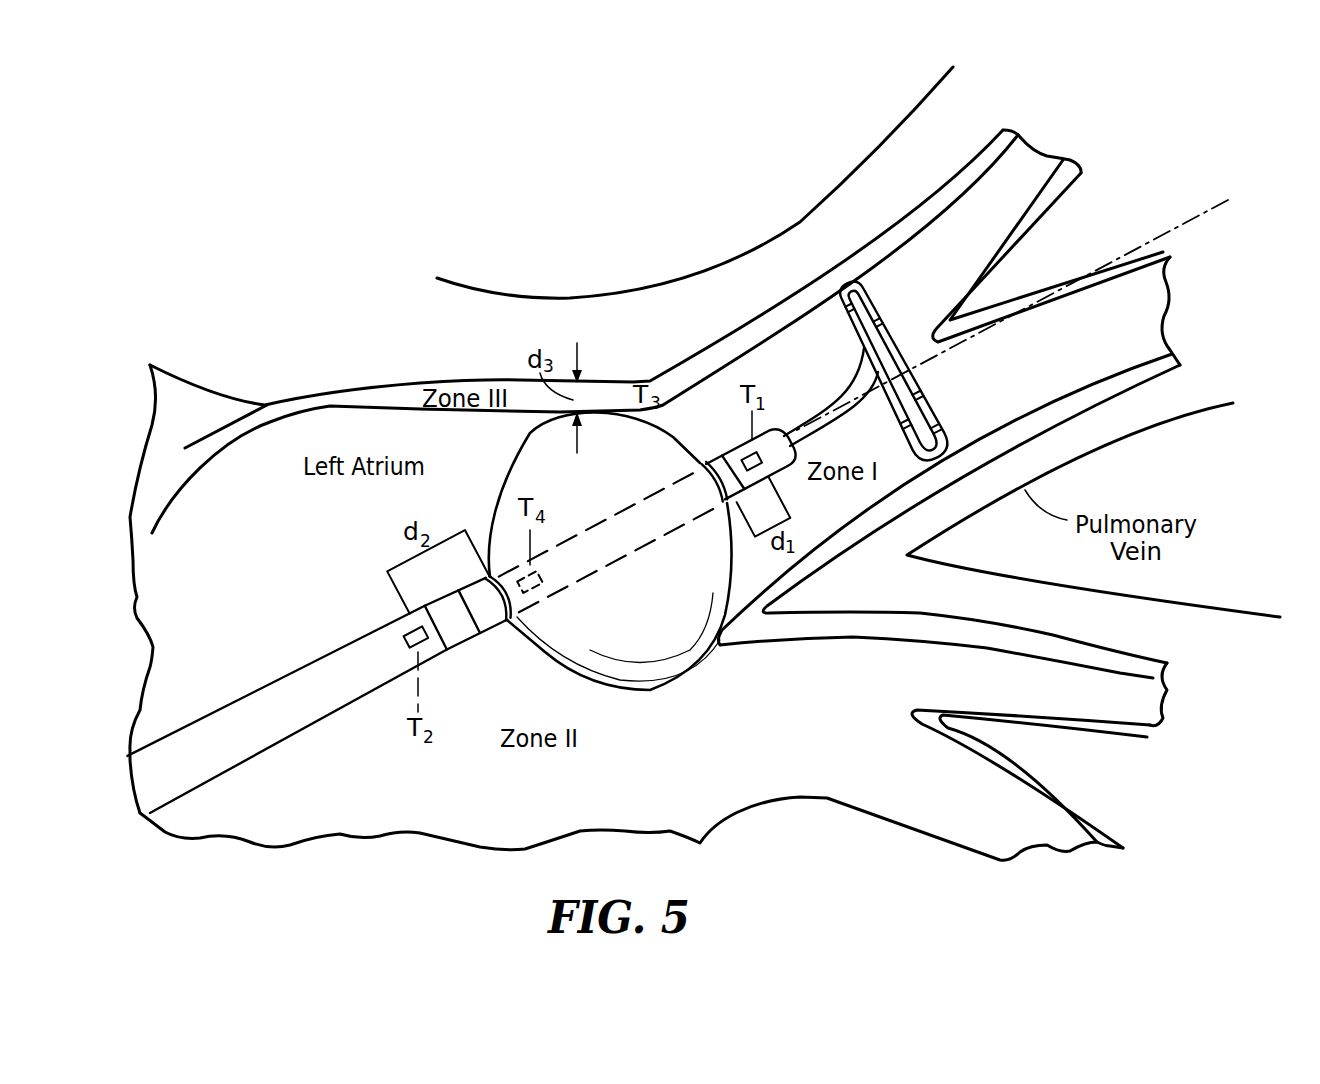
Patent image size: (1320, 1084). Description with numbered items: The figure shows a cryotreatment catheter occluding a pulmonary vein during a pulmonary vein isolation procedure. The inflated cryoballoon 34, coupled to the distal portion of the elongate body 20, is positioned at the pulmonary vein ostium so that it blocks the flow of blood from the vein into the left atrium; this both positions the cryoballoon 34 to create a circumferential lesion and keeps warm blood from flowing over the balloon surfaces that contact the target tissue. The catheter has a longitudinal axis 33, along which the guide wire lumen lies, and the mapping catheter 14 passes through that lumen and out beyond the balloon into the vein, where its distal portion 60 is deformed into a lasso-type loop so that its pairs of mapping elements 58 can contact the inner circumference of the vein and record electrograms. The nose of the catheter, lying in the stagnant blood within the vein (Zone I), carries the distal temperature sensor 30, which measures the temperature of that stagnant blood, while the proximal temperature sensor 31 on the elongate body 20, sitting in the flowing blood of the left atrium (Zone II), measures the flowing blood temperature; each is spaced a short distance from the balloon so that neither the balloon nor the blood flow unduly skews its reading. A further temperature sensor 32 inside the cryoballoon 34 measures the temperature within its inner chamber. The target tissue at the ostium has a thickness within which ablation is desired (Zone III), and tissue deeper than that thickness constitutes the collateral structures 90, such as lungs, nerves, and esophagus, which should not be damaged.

The mapping catheter 14 is at (837, 403).
The elongate body 20 is at (203, 737).
The distal temperature sensor 30 is at (746, 454).
The proximal temperature sensor 31 is at (405, 638).
The temperature sensor 32 is at (547, 567).
The longitudinal axis 33 is at (1197, 214).
The cryoballoon 34 is at (656, 634).
The mapping elements 58 is at (913, 392).
The distal portion of the mapping catheter 60 is at (893, 304).
The collateral structures 90 is at (504, 347).